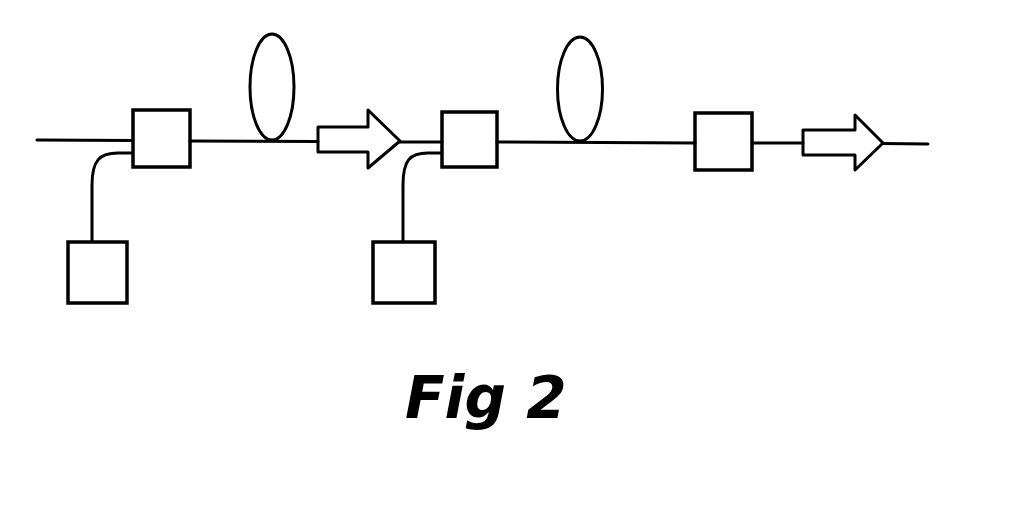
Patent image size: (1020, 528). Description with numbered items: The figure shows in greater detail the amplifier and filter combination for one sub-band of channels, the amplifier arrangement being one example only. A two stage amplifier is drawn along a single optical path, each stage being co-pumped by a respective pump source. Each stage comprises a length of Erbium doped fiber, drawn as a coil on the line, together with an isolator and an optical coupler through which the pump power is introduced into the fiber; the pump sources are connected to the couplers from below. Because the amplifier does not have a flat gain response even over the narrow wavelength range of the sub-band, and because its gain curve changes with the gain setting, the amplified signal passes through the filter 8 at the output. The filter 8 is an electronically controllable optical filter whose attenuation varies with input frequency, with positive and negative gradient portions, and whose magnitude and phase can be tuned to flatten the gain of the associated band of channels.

The filter 8 is at (733, 113).